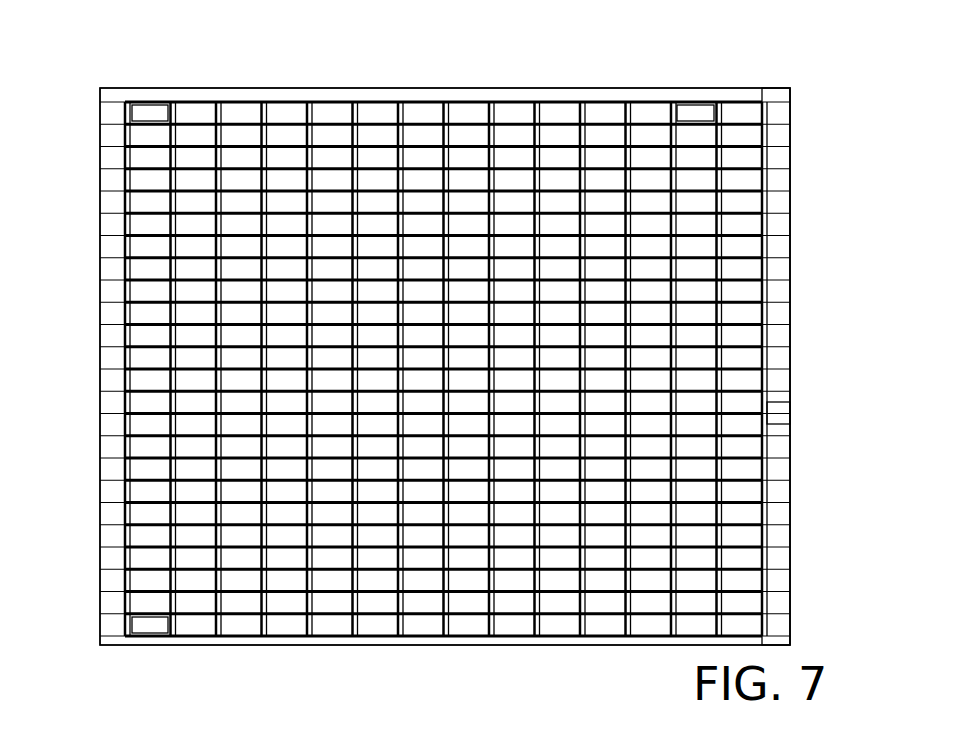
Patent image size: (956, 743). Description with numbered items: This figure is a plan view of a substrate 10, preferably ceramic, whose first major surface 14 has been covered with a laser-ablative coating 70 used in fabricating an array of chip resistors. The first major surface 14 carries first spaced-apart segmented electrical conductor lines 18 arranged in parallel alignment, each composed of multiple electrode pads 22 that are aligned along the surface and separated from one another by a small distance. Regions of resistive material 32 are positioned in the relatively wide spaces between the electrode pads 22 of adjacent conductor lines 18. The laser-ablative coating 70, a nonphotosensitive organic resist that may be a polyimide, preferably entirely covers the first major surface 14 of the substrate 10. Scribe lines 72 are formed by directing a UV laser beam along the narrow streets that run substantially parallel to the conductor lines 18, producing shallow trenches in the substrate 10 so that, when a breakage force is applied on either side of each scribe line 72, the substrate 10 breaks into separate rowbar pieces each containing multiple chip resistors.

The substrate 10 is at (110, 182).
The first major surface 14 is at (783, 422).
The first spaced-apart segmented electrical conductor lines 18 is at (172, 92).
The electrode pads 22 is at (763, 220).
The regions of resistive material 32 is at (373, 100).
The laser-ablative coating 70 is at (777, 102).
The scribe lines 72 is at (490, 88).